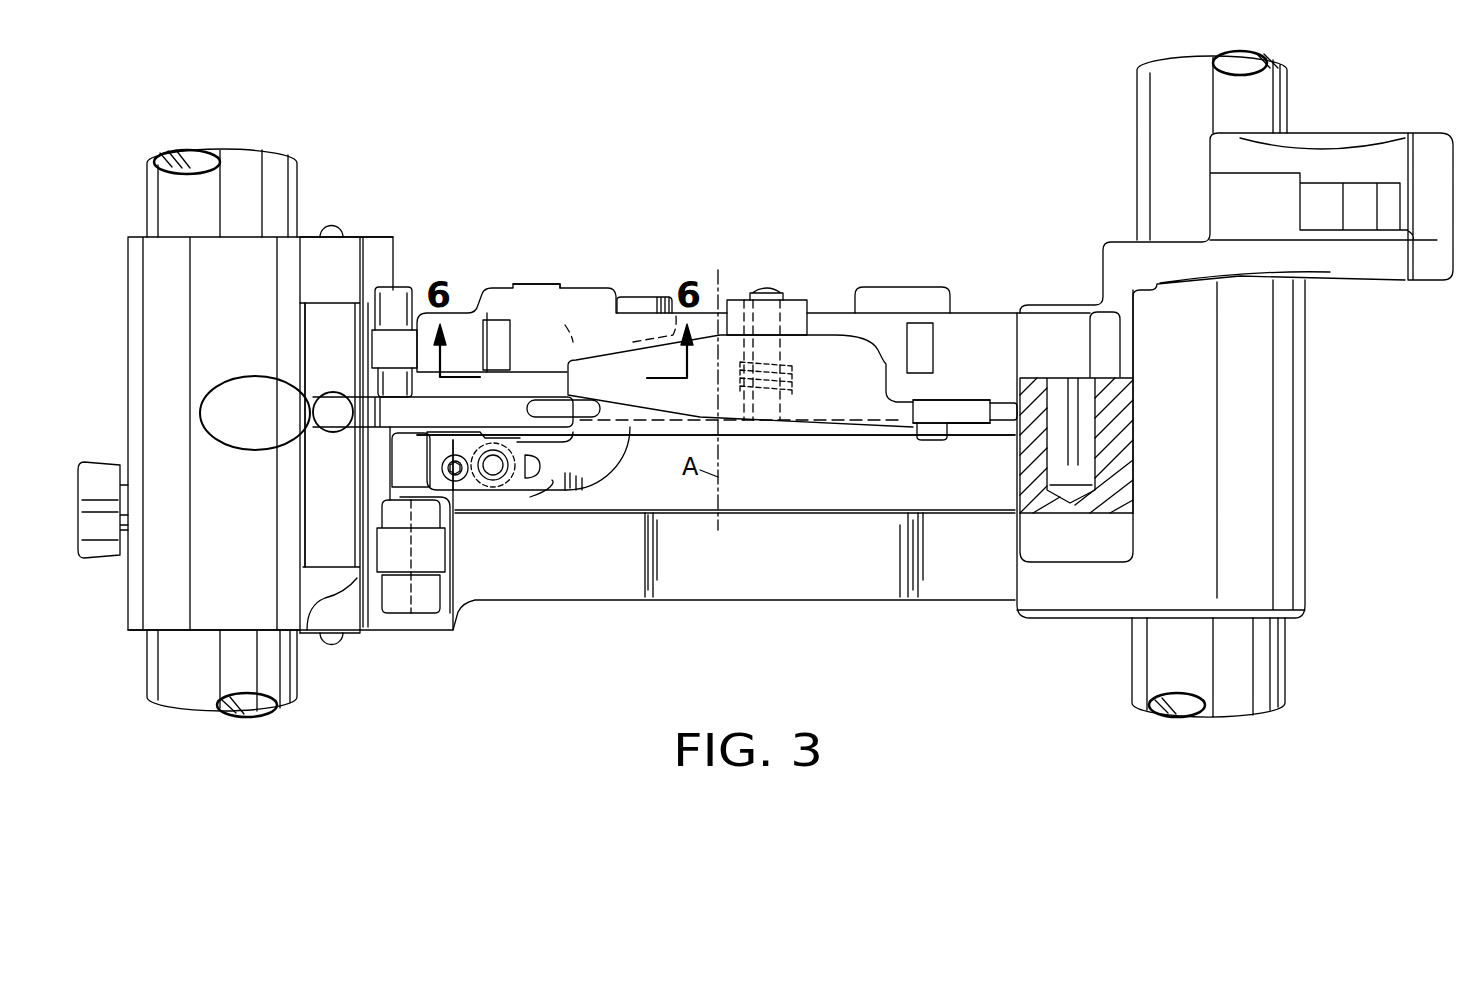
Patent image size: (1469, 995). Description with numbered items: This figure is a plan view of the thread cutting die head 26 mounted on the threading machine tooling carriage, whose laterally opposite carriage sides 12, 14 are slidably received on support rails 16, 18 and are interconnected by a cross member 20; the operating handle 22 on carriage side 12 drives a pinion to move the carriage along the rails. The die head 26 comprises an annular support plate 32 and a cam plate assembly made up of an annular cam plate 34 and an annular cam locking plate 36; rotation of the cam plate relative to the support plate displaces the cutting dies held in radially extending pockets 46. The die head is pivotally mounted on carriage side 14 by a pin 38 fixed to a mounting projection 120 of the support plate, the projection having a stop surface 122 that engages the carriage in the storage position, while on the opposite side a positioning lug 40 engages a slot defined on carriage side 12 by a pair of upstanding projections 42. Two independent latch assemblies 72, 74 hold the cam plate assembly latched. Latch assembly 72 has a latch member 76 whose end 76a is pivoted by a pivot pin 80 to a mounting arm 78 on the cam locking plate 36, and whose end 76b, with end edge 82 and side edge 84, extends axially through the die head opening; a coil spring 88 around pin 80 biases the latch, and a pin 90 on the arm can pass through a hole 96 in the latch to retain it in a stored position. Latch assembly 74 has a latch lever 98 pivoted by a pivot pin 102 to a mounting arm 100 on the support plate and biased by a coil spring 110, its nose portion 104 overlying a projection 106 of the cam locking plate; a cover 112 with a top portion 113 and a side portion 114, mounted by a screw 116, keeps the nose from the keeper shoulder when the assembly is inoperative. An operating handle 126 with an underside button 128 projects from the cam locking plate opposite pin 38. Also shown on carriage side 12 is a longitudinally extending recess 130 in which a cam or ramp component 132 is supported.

The carriage side 12 is at (140, 636).
The carriage side 14 is at (1310, 490).
The support rail 16 is at (155, 672).
The support rail 18 is at (1287, 663).
The cross member 20 is at (743, 580).
The operating handle 22 is at (105, 462).
The thread cutting die head 26 is at (812, 462).
The annular support plate 32 is at (487, 302).
The annular cam plate 34 is at (440, 399).
The annular cam locking plate 36 is at (400, 412).
The pin 38 is at (1075, 448).
The positioning lug 40 is at (378, 352).
The upstanding projections 42 is at (403, 290).
The radially extending pocket 46 is at (925, 335).
The latch assembly 72 is at (487, 403).
The latch assembly 74 is at (873, 343).
The latch member 76 is at (385, 484).
The latch end 76a is at (463, 492).
The latch end 76b is at (305, 597).
The mounting arm 78 is at (515, 482).
The pivot pin 80 is at (495, 455).
The end edge 82 is at (654, 305).
The side edge 84 is at (556, 300).
The coil spring 88 is at (496, 481).
The pin 90 is at (466, 478).
The hole 96 is at (541, 466).
The latch lever 98 is at (840, 347).
The mounting arm 100 is at (740, 300).
The pivot pin 102 is at (768, 292).
The nose portion 104 is at (900, 413).
The projection 106 is at (1003, 408).
The coil spring 110 is at (744, 443).
The cover 112 is at (953, 397).
The top portion 113 is at (977, 407).
The side portion 114 is at (967, 428).
The screw 116 is at (930, 438).
The mounting projection 120 is at (1078, 325).
The stop surface 122 is at (1103, 342).
The operating handle 126 is at (258, 428).
The button 128 is at (331, 436).
The longitudinally extending recess 130 is at (312, 538).
The cam or ramp component 132 is at (320, 317).